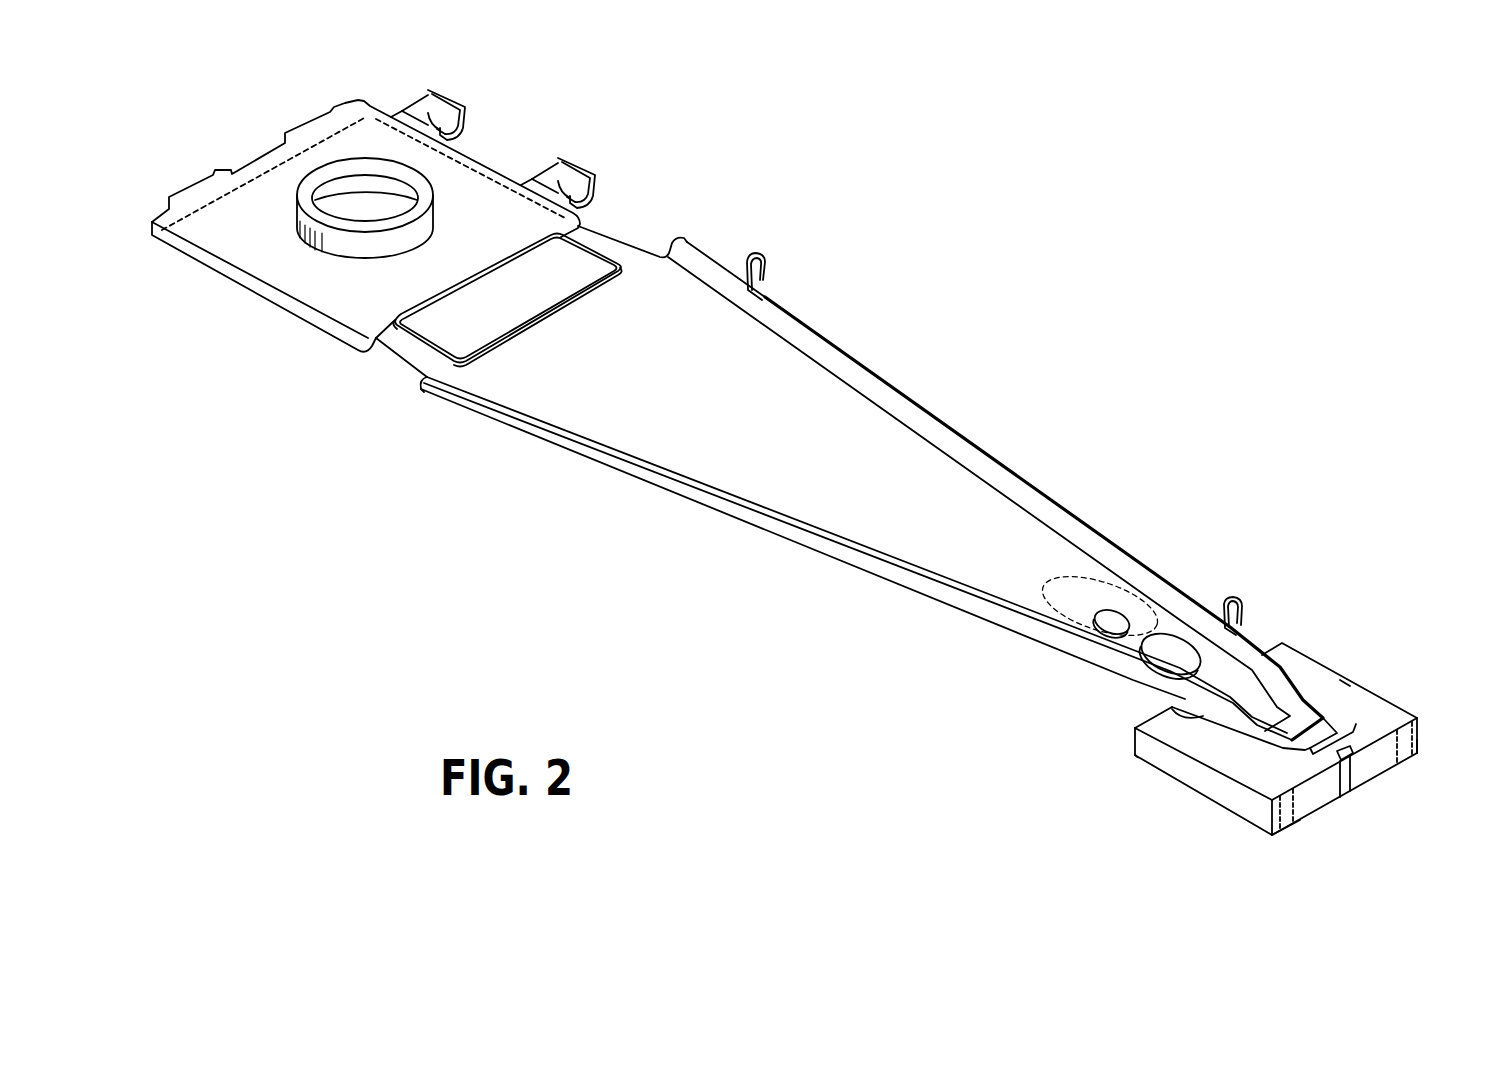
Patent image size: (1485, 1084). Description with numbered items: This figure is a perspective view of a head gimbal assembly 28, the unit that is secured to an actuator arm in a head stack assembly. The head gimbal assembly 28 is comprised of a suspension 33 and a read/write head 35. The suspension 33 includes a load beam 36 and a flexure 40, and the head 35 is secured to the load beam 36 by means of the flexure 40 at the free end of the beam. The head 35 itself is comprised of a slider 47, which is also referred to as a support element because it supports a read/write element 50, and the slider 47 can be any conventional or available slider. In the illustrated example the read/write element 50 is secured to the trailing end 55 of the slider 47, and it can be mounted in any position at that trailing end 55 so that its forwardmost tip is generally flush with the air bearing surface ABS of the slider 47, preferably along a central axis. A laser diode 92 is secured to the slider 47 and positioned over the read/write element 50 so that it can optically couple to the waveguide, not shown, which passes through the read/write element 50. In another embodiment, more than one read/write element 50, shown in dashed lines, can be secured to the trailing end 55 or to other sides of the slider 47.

The head gimbal assembly 28 is at (934, 172).
The suspension 33 is at (1113, 510).
The read/write head 35 is at (1306, 630).
The load beam 36 is at (893, 462).
The flexure 40 is at (1177, 704).
The slider 47 is at (1347, 677).
The read/write element 50 is at (1418, 732).
The trailing end 55 is at (1425, 740).
The laser diode 92 is at (1372, 730).
The air bearing surface ABS is at (1300, 822).